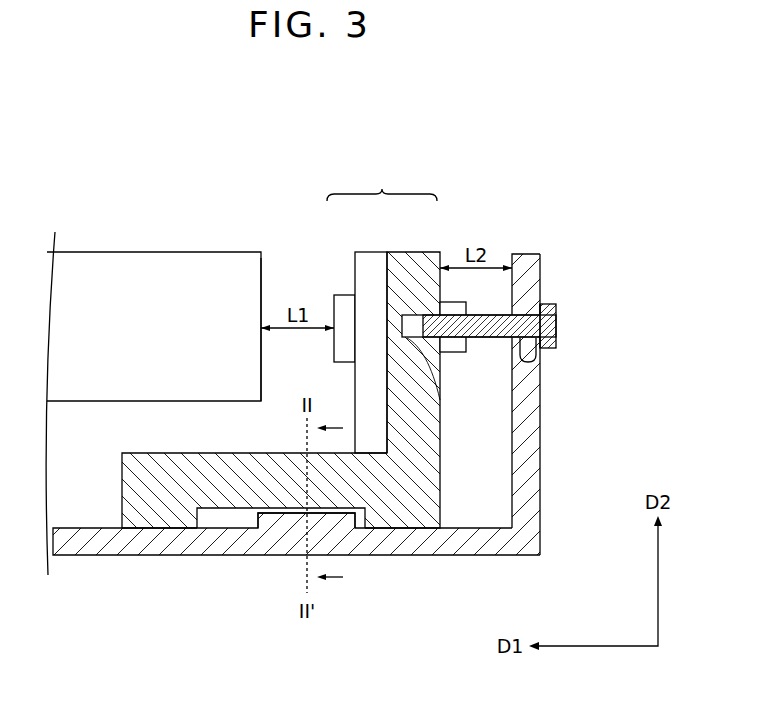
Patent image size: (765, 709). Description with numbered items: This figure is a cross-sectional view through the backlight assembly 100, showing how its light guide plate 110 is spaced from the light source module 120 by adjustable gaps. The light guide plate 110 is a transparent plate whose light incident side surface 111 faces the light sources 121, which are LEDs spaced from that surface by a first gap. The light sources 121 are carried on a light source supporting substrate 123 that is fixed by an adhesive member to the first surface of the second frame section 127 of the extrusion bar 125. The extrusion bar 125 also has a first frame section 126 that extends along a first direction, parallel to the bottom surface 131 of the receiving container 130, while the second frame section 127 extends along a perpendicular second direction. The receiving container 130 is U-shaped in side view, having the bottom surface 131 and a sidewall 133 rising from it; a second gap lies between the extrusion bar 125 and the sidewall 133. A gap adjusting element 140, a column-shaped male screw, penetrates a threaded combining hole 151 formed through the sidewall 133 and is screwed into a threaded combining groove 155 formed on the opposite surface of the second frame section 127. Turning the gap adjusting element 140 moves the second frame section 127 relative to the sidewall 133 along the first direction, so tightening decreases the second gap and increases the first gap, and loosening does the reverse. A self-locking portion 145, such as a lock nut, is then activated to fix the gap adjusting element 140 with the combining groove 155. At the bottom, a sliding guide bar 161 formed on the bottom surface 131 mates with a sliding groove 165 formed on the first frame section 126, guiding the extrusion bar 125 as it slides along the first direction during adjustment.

The backlight assembly 100 is at (307, 156).
The light guide plate 110 is at (156, 265).
The light incident side surface 111 is at (262, 262).
The light source module 120 is at (382, 183).
The light source 121 is at (346, 297).
The light source supporting substrate 123 is at (383, 262).
The extrusion bar 125 is at (422, 263).
The first frame section 126 is at (150, 510).
The second frame section 127 is at (440, 497).
The receiving container 130 is at (530, 262).
The bottom surface 131 is at (86, 506).
The sidewall 133 is at (540, 482).
The gap adjusting element 140 is at (556, 334).
The self-locking portion 145 is at (450, 353).
The combining hole 151 is at (530, 360).
The combining groove 155 is at (438, 395).
The sliding guide bar 161 is at (249, 520).
The sliding groove 165 is at (200, 513).